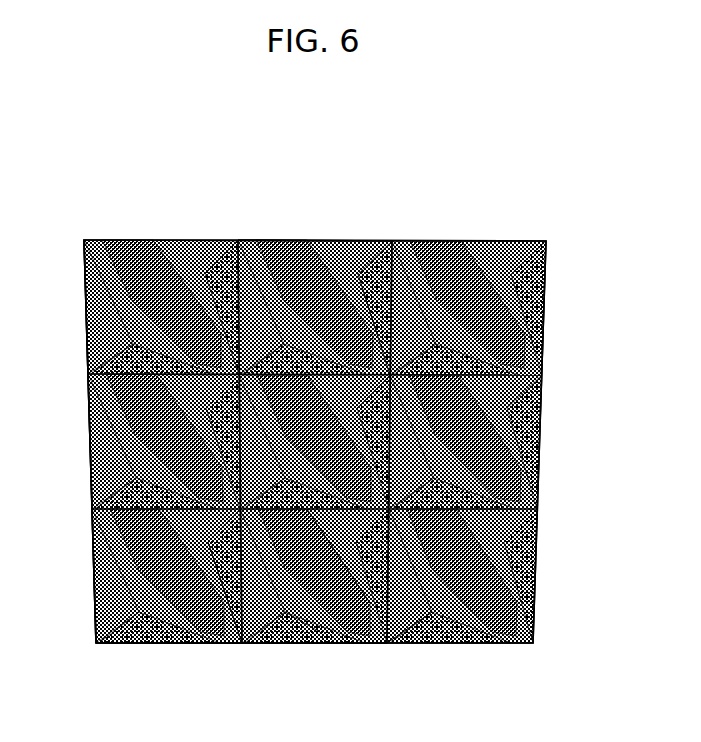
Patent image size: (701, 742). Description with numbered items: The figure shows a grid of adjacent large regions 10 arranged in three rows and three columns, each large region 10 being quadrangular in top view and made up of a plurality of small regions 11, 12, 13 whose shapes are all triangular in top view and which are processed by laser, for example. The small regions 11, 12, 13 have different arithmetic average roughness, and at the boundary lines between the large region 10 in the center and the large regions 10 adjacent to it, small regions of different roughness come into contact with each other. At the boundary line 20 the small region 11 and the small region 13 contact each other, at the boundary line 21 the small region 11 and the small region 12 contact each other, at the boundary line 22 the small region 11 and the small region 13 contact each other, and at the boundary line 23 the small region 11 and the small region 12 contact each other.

The large region 10 is at (169, 216).
The small region 11 is at (262, 238).
The small region 12 is at (378, 239).
The small region 13 is at (230, 641).
The boundary line 20 is at (528, 423).
The boundary line 21 is at (321, 607).
The boundary line 22 is at (89, 448).
The boundary line 23 is at (207, 266).